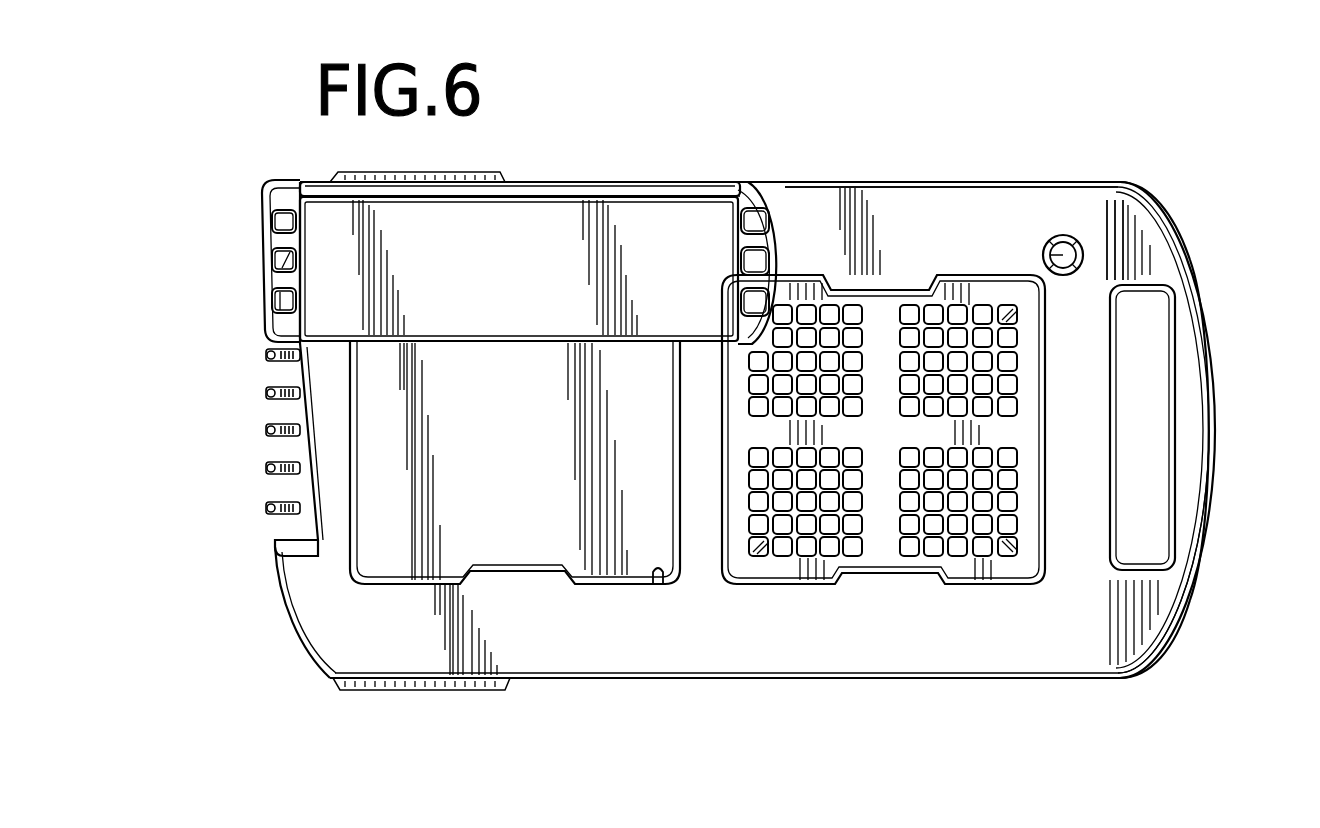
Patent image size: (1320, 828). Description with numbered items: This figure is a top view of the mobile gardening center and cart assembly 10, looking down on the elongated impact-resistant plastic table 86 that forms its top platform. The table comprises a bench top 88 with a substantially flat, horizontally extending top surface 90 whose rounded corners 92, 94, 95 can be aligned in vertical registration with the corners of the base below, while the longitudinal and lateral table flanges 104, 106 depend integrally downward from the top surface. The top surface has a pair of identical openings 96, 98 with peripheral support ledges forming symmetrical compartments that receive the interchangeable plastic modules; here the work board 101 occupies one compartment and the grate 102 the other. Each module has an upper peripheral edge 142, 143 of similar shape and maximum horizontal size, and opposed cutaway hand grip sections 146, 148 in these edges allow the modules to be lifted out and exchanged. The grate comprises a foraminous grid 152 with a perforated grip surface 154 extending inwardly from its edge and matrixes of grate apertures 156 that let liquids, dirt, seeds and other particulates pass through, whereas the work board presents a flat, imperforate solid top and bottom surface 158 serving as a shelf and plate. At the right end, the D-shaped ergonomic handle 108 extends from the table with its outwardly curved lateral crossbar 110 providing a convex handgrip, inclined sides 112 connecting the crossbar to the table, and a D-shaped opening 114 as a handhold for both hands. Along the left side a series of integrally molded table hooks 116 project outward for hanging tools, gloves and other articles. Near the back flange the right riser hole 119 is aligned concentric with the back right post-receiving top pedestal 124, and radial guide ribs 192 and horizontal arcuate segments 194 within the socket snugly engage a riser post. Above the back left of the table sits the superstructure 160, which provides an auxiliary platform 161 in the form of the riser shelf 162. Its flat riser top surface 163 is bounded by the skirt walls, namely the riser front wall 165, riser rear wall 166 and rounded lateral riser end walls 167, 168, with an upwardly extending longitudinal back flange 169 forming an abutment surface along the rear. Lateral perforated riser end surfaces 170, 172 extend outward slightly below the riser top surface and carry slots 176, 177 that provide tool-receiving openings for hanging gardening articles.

The portable data terminal 10 is at (745, 424).
The table 86 is at (745, 464).
The bench top 88 is at (712, 665).
The top surface 90 is at (850, 227).
The rounded corner 92 is at (328, 673).
The rounded corner 94 is at (1152, 192).
The rounded corner 95 is at (1163, 668).
The opening 96 is at (659, 586).
The opening 98 is at (1012, 573).
The work board 101 is at (515, 494).
The grate 102 is at (921, 477).
The longitudinal table flange 104 is at (1082, 681).
The lateral table flange 106 is at (905, 182).
The handle 108 is at (1208, 544).
The crossbar 110 is at (1213, 446).
The inclined sides 112 is at (1133, 260).
The D-shaped opening 114 is at (1166, 336).
The table hooks 116 is at (267, 432).
The riser hole 119 is at (1050, 241).
The top pedestal 124 is at (1030, 241).
The upper peripheral edge 142 is at (350, 432).
The upper peripheral edge 143 is at (874, 436).
The hand grip section 146 is at (518, 574).
The hand grip section 148 is at (893, 284).
The foraminous grid 152 is at (921, 474).
The perforated grip surface 154 is at (883, 436).
The grate apertures 156 is at (921, 474).
The top and bottom surface 158 is at (489, 494).
The superstructure 160 is at (300, 200).
The auxiliary platform 161 is at (518, 170).
The riser shelf 162 is at (520, 303).
The riser top surface 163 is at (520, 303).
The riser front wall 165 is at (643, 337).
The riser rear wall 166 is at (520, 270).
The riser end wall 167 is at (283, 192).
The riser end wall 168 is at (780, 227).
The back flange 169 is at (545, 195).
The riser end surface 170 is at (236, 251).
The riser end surface 172 is at (752, 184).
The slot 176 is at (276, 258).
The slot 177 is at (762, 259).
The radial guide ribs 192 is at (1050, 242).
The horizontal arcuate segments 194 is at (1068, 276).